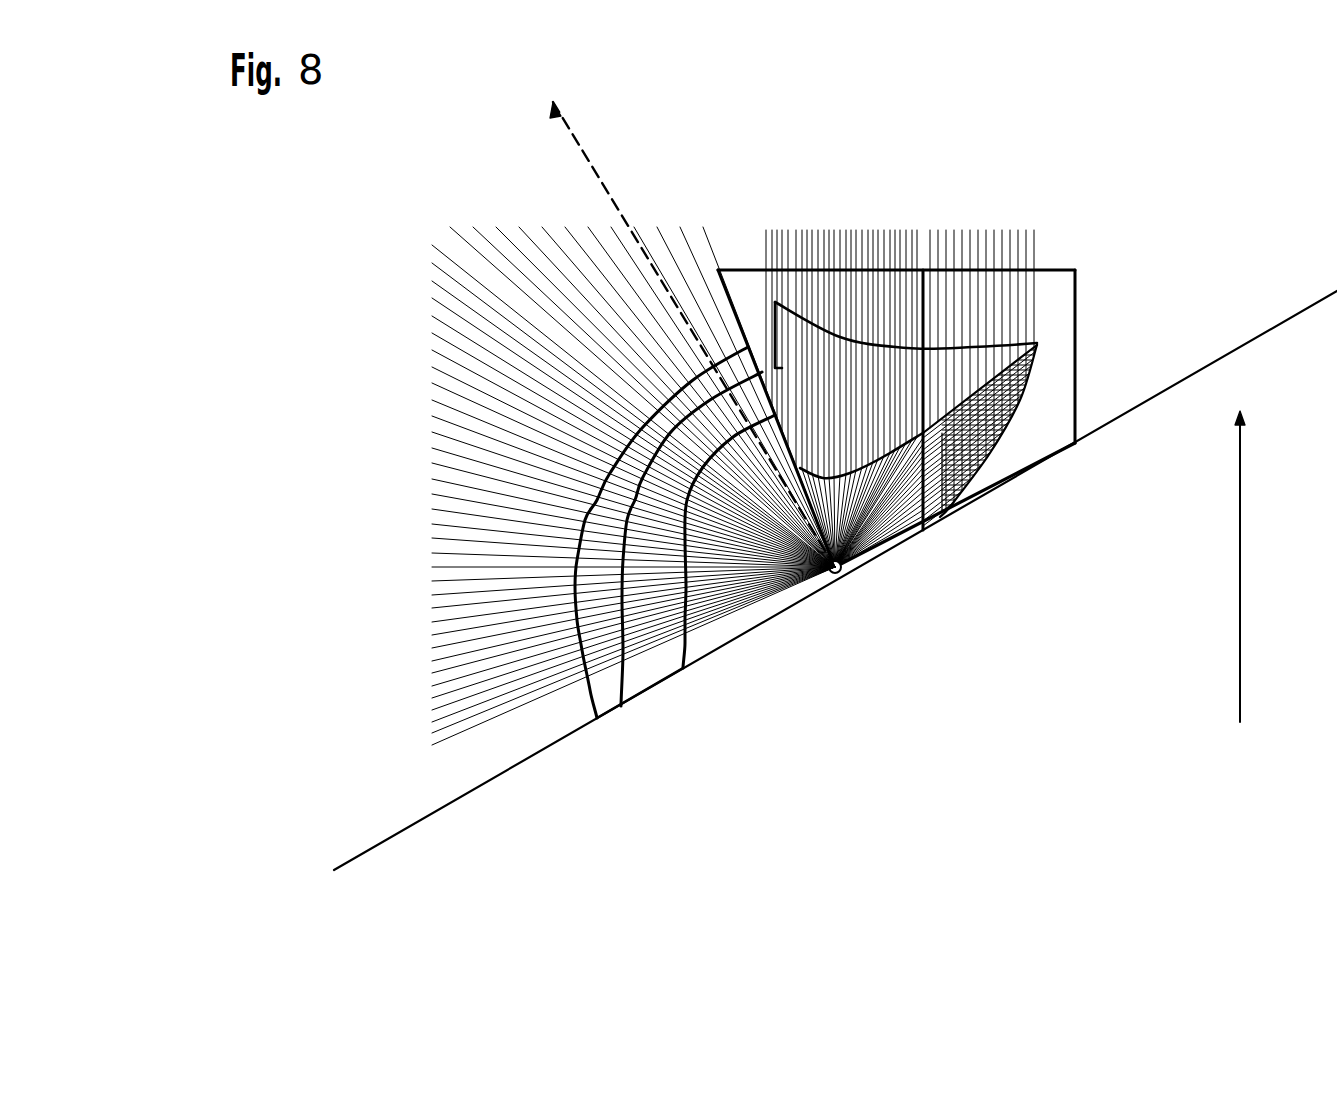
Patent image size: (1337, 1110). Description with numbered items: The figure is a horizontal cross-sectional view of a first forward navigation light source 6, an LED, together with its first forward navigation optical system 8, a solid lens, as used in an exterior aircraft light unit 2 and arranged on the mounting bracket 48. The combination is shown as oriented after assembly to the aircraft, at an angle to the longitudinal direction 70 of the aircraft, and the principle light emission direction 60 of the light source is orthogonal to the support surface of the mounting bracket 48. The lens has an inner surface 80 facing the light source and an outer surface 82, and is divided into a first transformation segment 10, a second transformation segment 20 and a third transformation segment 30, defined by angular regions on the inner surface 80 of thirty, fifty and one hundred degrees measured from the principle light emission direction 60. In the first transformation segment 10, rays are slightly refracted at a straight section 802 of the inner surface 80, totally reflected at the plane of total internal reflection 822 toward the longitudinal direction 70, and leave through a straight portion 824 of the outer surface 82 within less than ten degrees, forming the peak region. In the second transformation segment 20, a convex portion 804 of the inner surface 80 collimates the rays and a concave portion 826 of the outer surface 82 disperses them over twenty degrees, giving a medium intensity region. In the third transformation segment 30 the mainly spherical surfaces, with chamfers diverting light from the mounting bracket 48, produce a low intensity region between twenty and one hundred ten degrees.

The exterior aircraft light unit 2 is at (402, 220).
The mounting bracket 48 is at (1133, 410).
The first forward navigation light source 6 is at (833, 587).
The first forward navigation optical system 8 is at (655, 493).
The first transformation segment 10 is at (1077, 313).
The second transformation segment 20 is at (743, 268).
The third transformation segment 30 is at (580, 710).
The principle light emission direction 60 is at (583, 152).
The longitudinal direction 70 is at (1242, 565).
The inner surface 80 is at (708, 610).
The outer surface 82 is at (622, 628).
The straight section 802 is at (918, 474).
The convex portion 804 is at (845, 577).
The plane of total internal reflection 822 is at (1005, 410).
The straight portion of the outer surface 824 is at (1018, 372).
The concave portion 826 is at (911, 349).